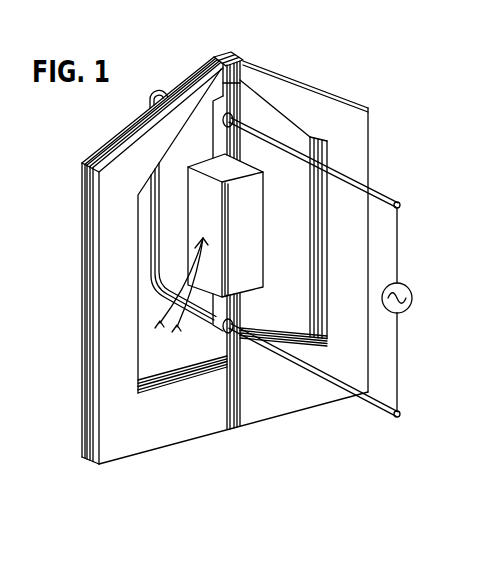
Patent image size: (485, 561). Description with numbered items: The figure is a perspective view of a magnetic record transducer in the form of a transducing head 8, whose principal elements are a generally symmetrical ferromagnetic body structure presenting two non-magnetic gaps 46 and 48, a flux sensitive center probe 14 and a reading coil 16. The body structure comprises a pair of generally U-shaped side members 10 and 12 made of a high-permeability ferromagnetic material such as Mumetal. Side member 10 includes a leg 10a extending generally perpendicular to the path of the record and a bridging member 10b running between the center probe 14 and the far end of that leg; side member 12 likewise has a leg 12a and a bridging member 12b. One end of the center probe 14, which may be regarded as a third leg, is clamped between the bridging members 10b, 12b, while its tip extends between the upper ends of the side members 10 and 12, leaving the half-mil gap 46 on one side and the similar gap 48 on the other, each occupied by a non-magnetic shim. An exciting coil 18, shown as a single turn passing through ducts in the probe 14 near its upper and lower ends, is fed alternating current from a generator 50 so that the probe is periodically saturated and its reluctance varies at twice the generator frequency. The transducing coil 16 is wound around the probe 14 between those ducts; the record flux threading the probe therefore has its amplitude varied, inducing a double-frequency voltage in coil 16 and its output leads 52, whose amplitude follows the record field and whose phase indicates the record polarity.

The transducing head 8 is at (383, 112).
The side member 10 is at (199, 295).
The leg 10a is at (122, 380).
The bridging member 10b is at (162, 423).
The side member 12 is at (309, 277).
The leg 12a is at (347, 337).
The bridging member 12b is at (283, 400).
The center probe 14 is at (249, 104).
The transducing coil 16 is at (257, 245).
The exciting coil 18 is at (380, 192).
The non-magnetic gap 46 is at (214, 57).
The non-magnetic gap 48 is at (234, 59).
The generator 50 is at (411, 309).
The output leads 52 is at (180, 299).